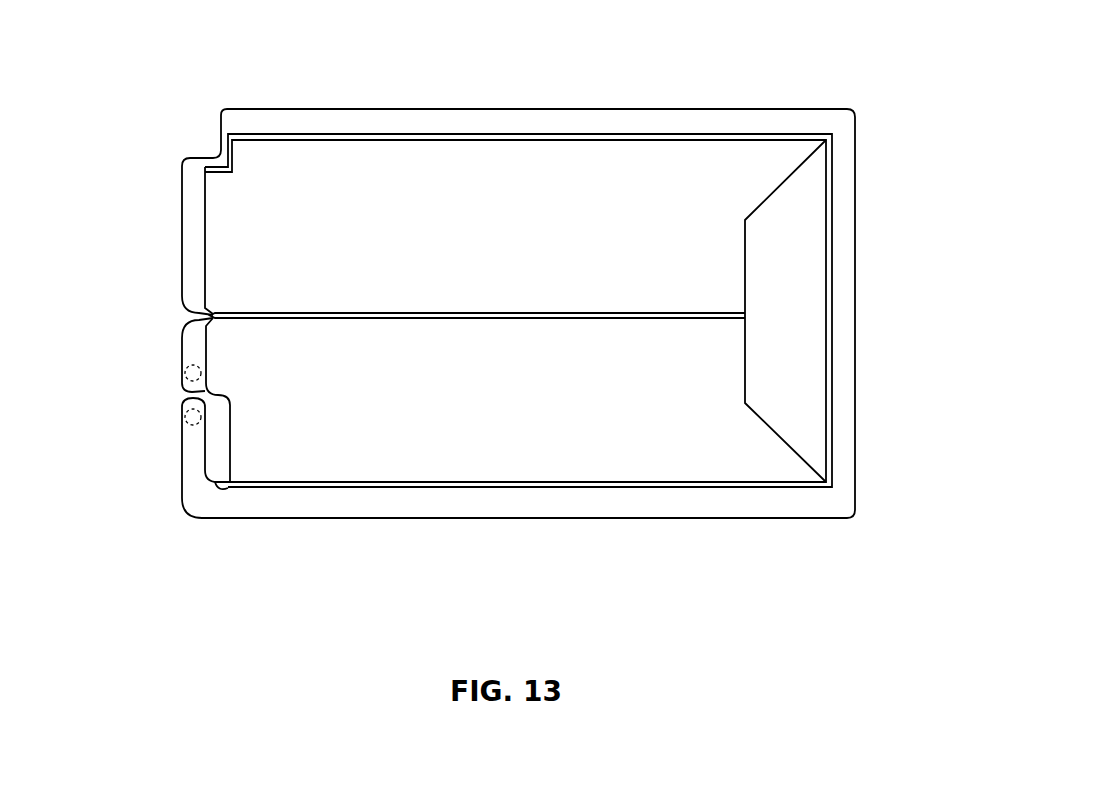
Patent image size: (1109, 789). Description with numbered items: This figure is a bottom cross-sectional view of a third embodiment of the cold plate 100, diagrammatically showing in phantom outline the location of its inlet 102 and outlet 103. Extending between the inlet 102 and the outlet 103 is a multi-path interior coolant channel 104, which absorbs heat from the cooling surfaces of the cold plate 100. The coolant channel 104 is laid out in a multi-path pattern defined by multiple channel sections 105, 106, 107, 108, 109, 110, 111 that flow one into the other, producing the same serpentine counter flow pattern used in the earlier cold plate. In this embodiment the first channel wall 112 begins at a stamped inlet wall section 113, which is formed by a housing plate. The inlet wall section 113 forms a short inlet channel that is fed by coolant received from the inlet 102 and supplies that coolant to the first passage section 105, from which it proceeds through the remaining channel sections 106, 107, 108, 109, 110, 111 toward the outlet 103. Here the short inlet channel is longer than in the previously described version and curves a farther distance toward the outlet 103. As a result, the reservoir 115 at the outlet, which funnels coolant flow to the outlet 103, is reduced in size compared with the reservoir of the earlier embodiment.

The cold plate 100 is at (707, 63).
The inlet 102 is at (182, 422).
The outlet 103 is at (180, 375).
The multi-path interior coolant channel 104 is at (390, 160).
The first passage section 105 is at (328, 508).
The channel section 106 is at (847, 378).
The channel section 107 is at (526, 118).
The channel section 108 is at (185, 220).
The channel section 109 is at (310, 162).
The channel section 110 is at (812, 272).
The channel section 111 is at (613, 450).
The first channel wall 112 is at (445, 487).
The stamped inlet wall section 113 is at (228, 488).
The reservoir 115 is at (222, 385).